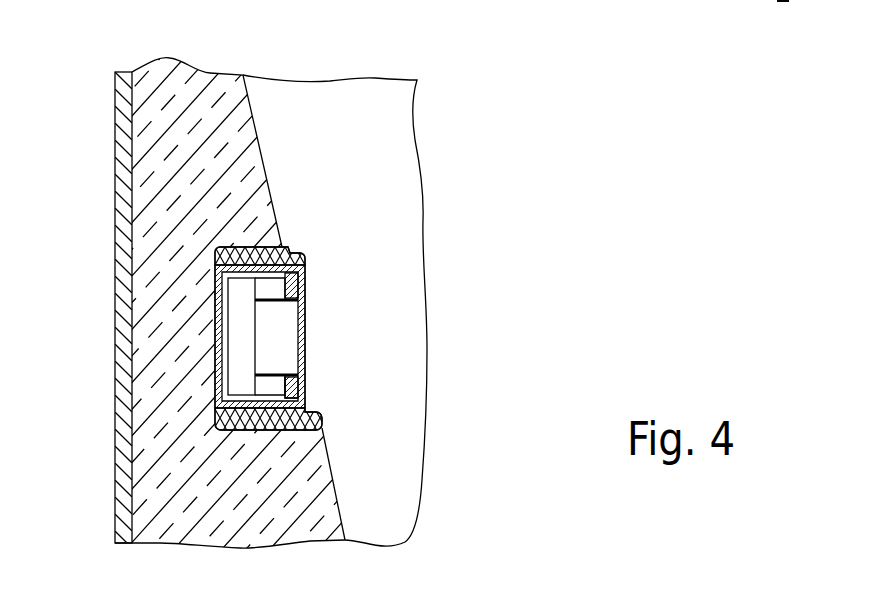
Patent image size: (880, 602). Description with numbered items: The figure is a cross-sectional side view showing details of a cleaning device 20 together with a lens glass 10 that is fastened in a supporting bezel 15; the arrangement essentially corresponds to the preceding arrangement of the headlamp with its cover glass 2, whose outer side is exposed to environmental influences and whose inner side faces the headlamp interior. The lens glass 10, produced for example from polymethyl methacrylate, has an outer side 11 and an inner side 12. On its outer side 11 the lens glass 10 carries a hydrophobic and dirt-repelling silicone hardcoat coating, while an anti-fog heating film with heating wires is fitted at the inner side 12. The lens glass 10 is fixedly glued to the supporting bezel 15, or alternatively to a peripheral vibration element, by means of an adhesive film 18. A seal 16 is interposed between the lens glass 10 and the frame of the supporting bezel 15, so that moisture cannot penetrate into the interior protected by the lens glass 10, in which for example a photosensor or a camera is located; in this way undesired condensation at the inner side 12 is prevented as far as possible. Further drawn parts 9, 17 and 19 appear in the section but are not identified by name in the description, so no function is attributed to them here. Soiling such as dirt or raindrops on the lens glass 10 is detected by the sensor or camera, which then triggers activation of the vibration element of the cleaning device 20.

The cover glass 2 is at (165, 355).
The outer contour edge 9 is at (272, 426).
The lens glass 10 is at (490, 141).
The outer side 11 is at (322, 277).
The inner side 12 is at (282, 335).
The supporting bezel 15 is at (250, 367).
The seal 16 is at (290, 384).
The support element 17 is at (300, 391).
The adhesive film 18 is at (215, 317).
The sealing element 19 is at (215, 250).
The cleaning device 20 is at (123, 105).